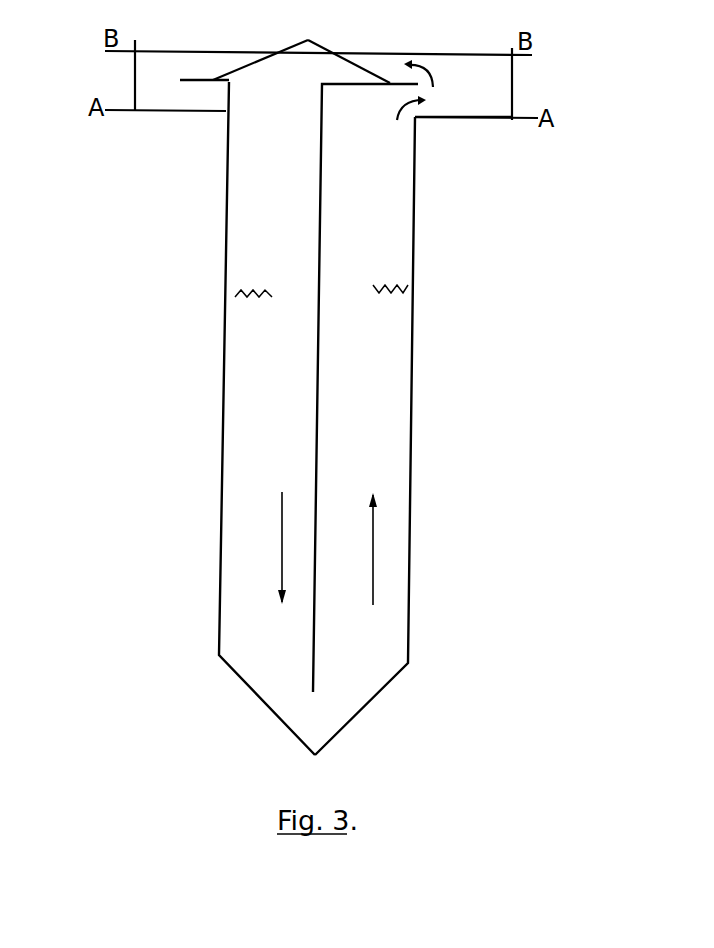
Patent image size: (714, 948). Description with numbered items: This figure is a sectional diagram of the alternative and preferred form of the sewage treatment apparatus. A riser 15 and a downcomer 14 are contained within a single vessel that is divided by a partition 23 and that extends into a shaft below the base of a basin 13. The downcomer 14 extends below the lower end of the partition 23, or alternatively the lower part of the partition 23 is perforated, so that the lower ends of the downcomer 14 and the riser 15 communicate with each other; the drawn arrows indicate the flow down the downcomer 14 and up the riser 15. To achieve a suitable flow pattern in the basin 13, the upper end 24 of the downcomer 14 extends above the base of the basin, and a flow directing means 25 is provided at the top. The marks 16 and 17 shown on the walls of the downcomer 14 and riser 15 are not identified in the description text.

The basin 13 is at (512, 90).
The downcomer 14 is at (240, 425).
The riser 15 is at (392, 430).
The flow marks left 16 is at (270, 293).
The flow marks right 17 is at (373, 293).
The partition 23 is at (318, 355).
The upper end of downcomer 24 is at (229, 97).
The flow directing means 25 is at (301, 49).